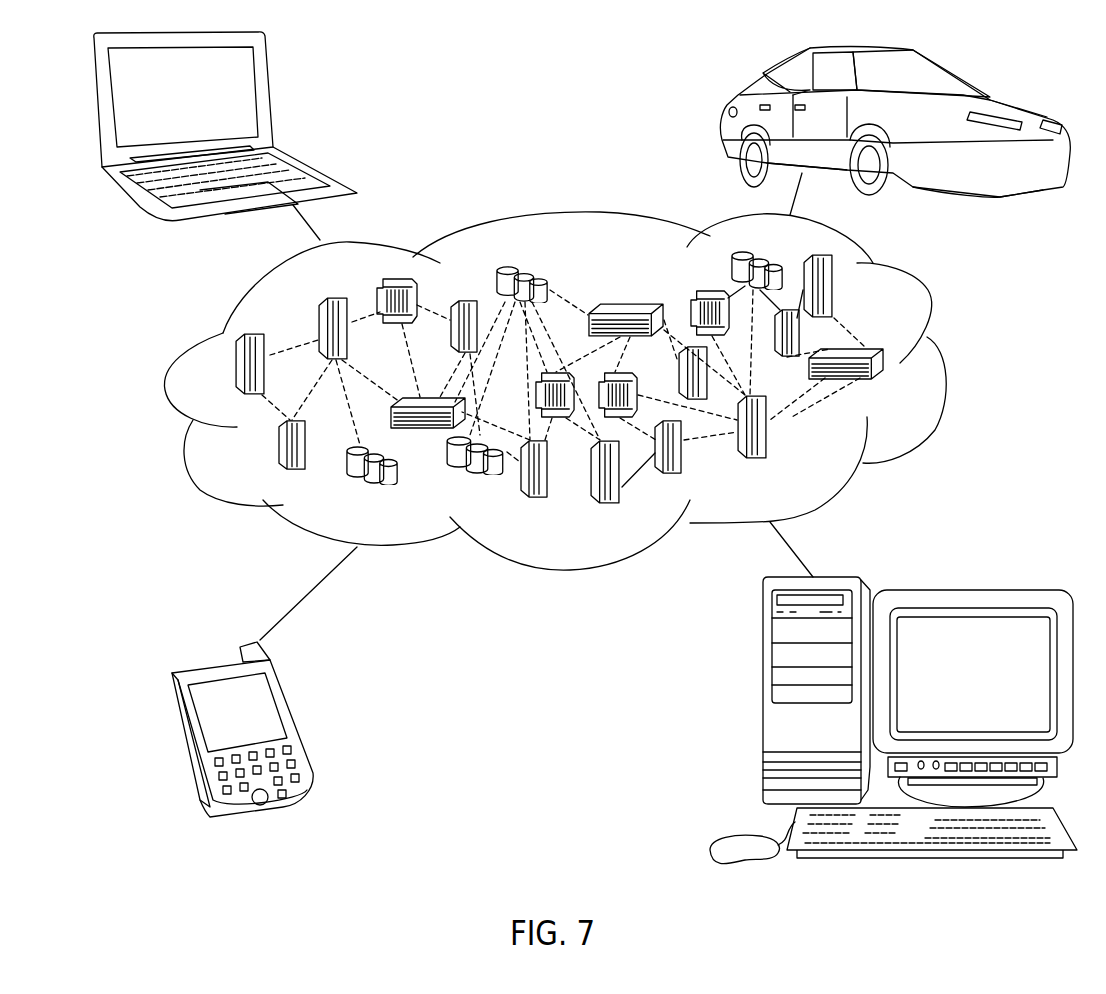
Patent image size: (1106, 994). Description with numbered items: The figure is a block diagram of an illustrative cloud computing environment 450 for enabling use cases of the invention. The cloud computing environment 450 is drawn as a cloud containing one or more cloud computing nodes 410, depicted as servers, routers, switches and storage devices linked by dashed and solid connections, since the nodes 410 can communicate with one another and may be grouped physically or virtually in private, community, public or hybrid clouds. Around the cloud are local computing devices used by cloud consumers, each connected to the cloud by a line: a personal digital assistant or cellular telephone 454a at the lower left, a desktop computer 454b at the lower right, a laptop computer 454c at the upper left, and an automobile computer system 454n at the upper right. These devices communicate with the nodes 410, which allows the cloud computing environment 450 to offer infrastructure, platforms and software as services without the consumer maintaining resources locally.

The cloud computing environment 450 is at (930, 300).
The cloud computing node 410 is at (900, 385).
The laptop computer 454c is at (270, 87).
The automobile computer system 454n is at (737, 97).
The personal digital assistant (PDA) or cellular telephone 454a is at (293, 713).
The desktop computer 454b is at (763, 703).